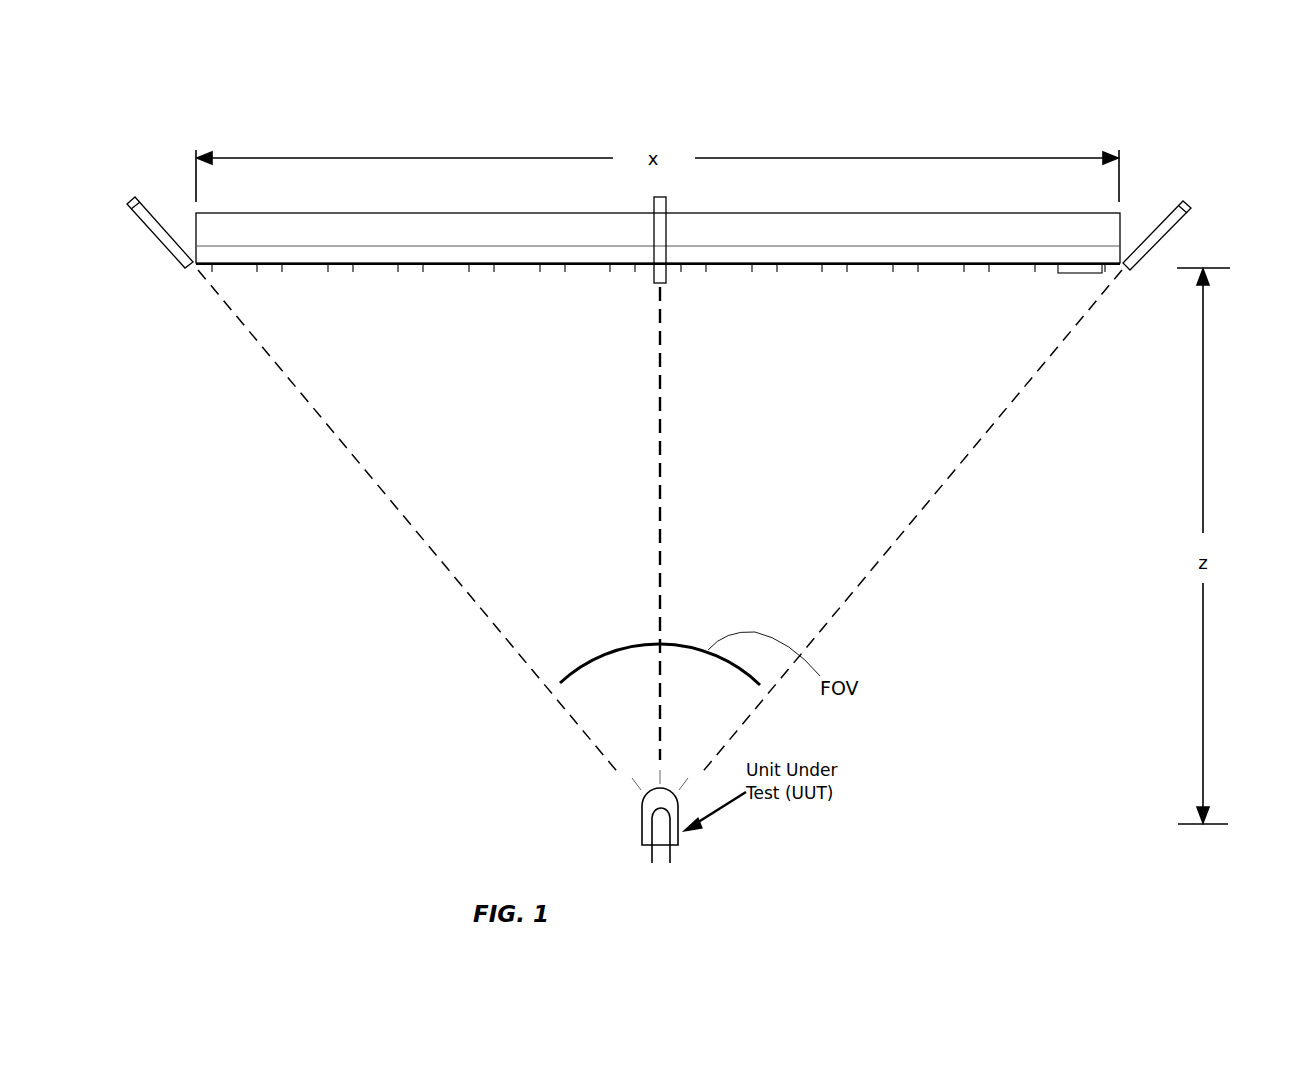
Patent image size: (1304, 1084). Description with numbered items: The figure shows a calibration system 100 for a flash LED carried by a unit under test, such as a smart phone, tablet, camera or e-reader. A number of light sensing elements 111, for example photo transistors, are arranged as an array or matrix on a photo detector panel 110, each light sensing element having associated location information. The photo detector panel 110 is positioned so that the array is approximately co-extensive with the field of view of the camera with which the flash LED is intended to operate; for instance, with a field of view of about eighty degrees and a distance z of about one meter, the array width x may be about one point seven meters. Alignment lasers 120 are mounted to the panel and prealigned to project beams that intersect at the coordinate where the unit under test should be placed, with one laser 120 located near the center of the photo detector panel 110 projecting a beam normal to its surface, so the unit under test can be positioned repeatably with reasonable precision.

The calibration system 100 is at (158, 104).
The photo detector panel 110 is at (563, 221).
The light sensing elements 111 is at (863, 268).
The alignment lasers 120 is at (132, 205).